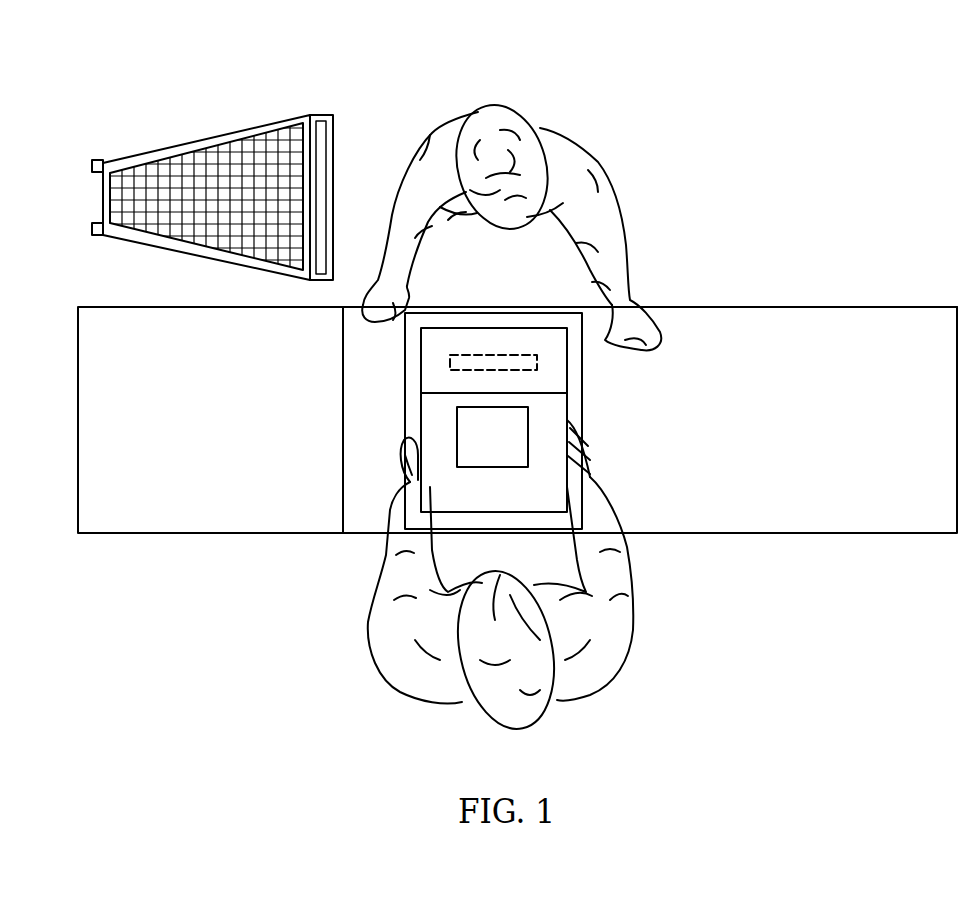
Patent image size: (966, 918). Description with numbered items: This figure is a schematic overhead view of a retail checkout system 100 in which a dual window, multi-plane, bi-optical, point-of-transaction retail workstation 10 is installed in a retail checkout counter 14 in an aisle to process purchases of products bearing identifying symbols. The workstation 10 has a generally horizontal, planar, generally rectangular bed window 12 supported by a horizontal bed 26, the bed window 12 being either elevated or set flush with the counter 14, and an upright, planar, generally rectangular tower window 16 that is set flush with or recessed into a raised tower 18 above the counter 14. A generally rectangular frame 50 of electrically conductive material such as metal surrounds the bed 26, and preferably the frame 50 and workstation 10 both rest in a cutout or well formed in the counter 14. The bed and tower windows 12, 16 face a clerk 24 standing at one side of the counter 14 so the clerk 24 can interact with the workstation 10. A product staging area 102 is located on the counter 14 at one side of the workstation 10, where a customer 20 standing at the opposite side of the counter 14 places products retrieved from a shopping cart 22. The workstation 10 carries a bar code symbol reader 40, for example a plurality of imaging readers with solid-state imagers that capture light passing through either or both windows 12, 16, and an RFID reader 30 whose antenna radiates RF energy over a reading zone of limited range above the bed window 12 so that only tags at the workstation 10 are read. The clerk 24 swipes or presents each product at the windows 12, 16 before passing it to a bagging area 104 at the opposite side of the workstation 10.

The retail workstation 10 is at (599, 383).
The bed window 12 is at (513, 460).
The retail checkout counter 14 is at (900, 318).
The tower window 16 is at (462, 354).
The raised tower 18 is at (493, 327).
The customer 20 is at (498, 103).
The shopping cart 22 is at (206, 140).
The clerk 24 is at (372, 636).
The horizontal bed 26 is at (440, 410).
The RFID reader 30 is at (549, 455).
The bar code symbol reader 40 is at (581, 373).
The frame 50 is at (541, 320).
The retail checkout system 100 is at (740, 100).
The product staging area 102 is at (733, 318).
The bagging area 104 is at (97, 425).